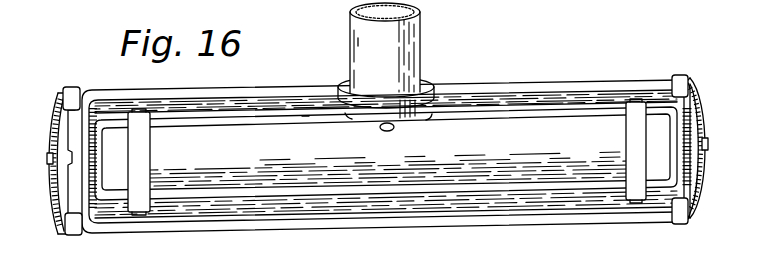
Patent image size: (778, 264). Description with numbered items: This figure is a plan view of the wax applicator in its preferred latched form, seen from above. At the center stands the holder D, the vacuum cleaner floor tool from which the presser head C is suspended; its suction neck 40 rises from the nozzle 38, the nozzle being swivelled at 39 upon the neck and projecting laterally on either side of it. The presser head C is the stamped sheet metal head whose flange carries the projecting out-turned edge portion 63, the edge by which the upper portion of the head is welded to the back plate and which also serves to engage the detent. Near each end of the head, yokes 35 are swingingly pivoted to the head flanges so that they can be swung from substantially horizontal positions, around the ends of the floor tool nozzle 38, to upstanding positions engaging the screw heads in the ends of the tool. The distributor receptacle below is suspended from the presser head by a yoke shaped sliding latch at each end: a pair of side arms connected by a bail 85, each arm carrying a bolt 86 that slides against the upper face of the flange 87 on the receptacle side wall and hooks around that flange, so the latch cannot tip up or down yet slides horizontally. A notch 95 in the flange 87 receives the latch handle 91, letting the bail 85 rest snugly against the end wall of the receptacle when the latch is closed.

The yoke 35 is at (151, 160).
The nozzle 38 is at (382, 140).
The swivel 39 is at (430, 84).
The suction neck 40 is at (424, 42).
The out-turned edge portion 63 is at (666, 206).
The bail 85 is at (50, 126).
The bolt 86 is at (70, 88).
The flange 87 is at (397, 229).
The handle 91 is at (50, 158).
The notch 95 is at (70, 171).
The presser head C is at (309, 116).
The holder D is at (358, 42).